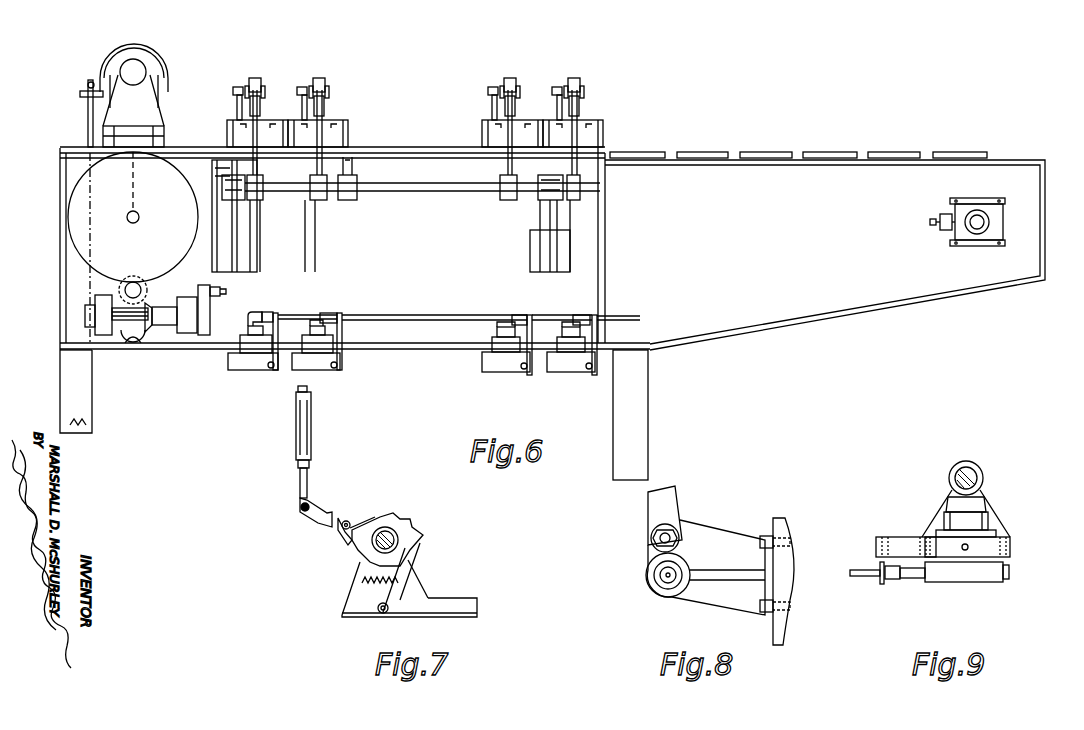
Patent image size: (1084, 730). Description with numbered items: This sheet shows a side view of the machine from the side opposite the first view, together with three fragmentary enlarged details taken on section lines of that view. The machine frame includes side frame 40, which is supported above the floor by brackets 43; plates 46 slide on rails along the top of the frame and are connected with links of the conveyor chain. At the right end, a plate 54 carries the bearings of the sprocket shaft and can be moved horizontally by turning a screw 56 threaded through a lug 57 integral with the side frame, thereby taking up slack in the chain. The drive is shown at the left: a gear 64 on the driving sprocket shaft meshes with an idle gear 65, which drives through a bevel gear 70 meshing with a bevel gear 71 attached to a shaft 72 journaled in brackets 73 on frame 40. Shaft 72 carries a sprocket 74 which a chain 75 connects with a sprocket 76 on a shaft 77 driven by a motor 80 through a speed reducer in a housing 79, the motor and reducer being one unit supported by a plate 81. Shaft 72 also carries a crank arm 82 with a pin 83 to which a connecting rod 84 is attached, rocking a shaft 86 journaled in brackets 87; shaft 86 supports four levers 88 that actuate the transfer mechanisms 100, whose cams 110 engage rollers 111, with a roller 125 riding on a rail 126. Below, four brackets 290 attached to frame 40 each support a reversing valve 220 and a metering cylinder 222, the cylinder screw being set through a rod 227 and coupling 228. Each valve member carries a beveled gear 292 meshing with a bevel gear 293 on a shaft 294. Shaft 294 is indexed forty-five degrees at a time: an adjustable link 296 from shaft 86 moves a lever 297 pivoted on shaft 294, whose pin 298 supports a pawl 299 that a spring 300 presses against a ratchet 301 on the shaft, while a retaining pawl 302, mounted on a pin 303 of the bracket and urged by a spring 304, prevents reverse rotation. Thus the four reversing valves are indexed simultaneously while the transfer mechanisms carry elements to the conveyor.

In FIG. 6, the side frame 40 is at (852, 310).
In FIG. 8, the side frame 40 is at (785, 530).
In FIG. 6, the brackets 43 is at (60, 383).
In FIG. 6, the plates 46 is at (845, 160).
In FIG. 6, the plates 54 is at (1003, 228).
In FIG. 6, the screw 56 is at (930, 230).
In FIG. 6, the lug 57 is at (942, 214).
In FIG. 6, the gear 64 is at (68, 215).
In FIG. 6, the idle gear 65 is at (136, 282).
In FIG. 6, the bevel gear 70 is at (122, 340).
In FIG. 6, the bevel gear 71 is at (152, 305).
In FIG. 6, the shaft 72 is at (140, 340).
In FIG. 6, the brackets 73 is at (186, 297).
In FIG. 8, the brackets 73 is at (712, 610).
In FIG. 6, the sprocket 74 is at (85, 310).
In FIG. 6, the chain 75 is at (88, 130).
In FIG. 6, the sprocket 76 is at (92, 82).
In FIG. 6, the shaft 77 is at (80, 92).
In FIG. 6, the housing 79 is at (160, 95).
In FIG. 6, the motor 80 is at (162, 54).
In FIG. 6, the plate 81 is at (165, 140).
In FIG. 6, the crank arm 82 is at (204, 336).
In FIG. 8, the crank arm 82 is at (686, 540).
In FIG. 6, the pin 83 is at (228, 294).
In FIG. 8, the pin 83 is at (678, 528).
In FIG. 6, the connecting rod 84 is at (213, 265).
In FIG. 8, the connecting rod 84 is at (676, 493).
In FIG. 6, the shaft 86 is at (482, 184).
In FIG. 6, the brackets 87 is at (256, 224).
In FIG. 6, the levers 88 is at (312, 162).
In FIG. 6, the transfer mechanism 100 is at (405, 118).
In FIG. 6, the cams 110 is at (260, 106).
In FIG. 6, the roller 111 is at (262, 84).
In FIG. 6, the roller 125 is at (233, 90).
In FIG. 6, the rail 126 is at (237, 108).
In FIG. 6, the reversing valve 220 is at (258, 355).
In FIG. 9, the reversing valve 220 is at (1000, 524).
In FIG. 6, the metering cylinder 222 is at (236, 368).
In FIG. 9, the metering cylinder 222 is at (980, 580).
In FIG. 9, the rod 227 is at (864, 586).
In FIG. 9, the coupling 228 is at (885, 584).
In FIG. 6, the brackets 290 is at (270, 342).
In FIG. 7, the brackets 290 is at (477, 612).
In FIG. 9, the brackets 290 is at (938, 502).
In FIG. 6, the beveled gear 292 is at (264, 316).
In FIG. 9, the beveled gear 292 is at (990, 498).
In FIG. 6, the bevel gear 293 is at (240, 333).
In FIG. 9, the bevel gear 293 is at (980, 462).
In FIG. 6, the shaft 294 is at (427, 320).
In FIG. 7, the shaft 294 is at (400, 538).
In FIG. 9, the shaft 294 is at (984, 476).
In FIG. 6, the adjustable link 296 is at (312, 396).
In FIG. 7, the adjustable link 296 is at (303, 430).
In FIG. 7, the lever 297 is at (312, 535).
In FIG. 7, the pin 298 is at (347, 520).
In FIG. 7, the pawl 299 is at (365, 512).
In FIG. 7, the spring 300 is at (343, 540).
In FIG. 7, the ratchet 301 is at (405, 522).
In FIG. 7, the retaining pawl 302 is at (410, 573).
In FIG. 7, the pin 303 is at (380, 615).
In FIG. 7, the spring 304 is at (360, 580).